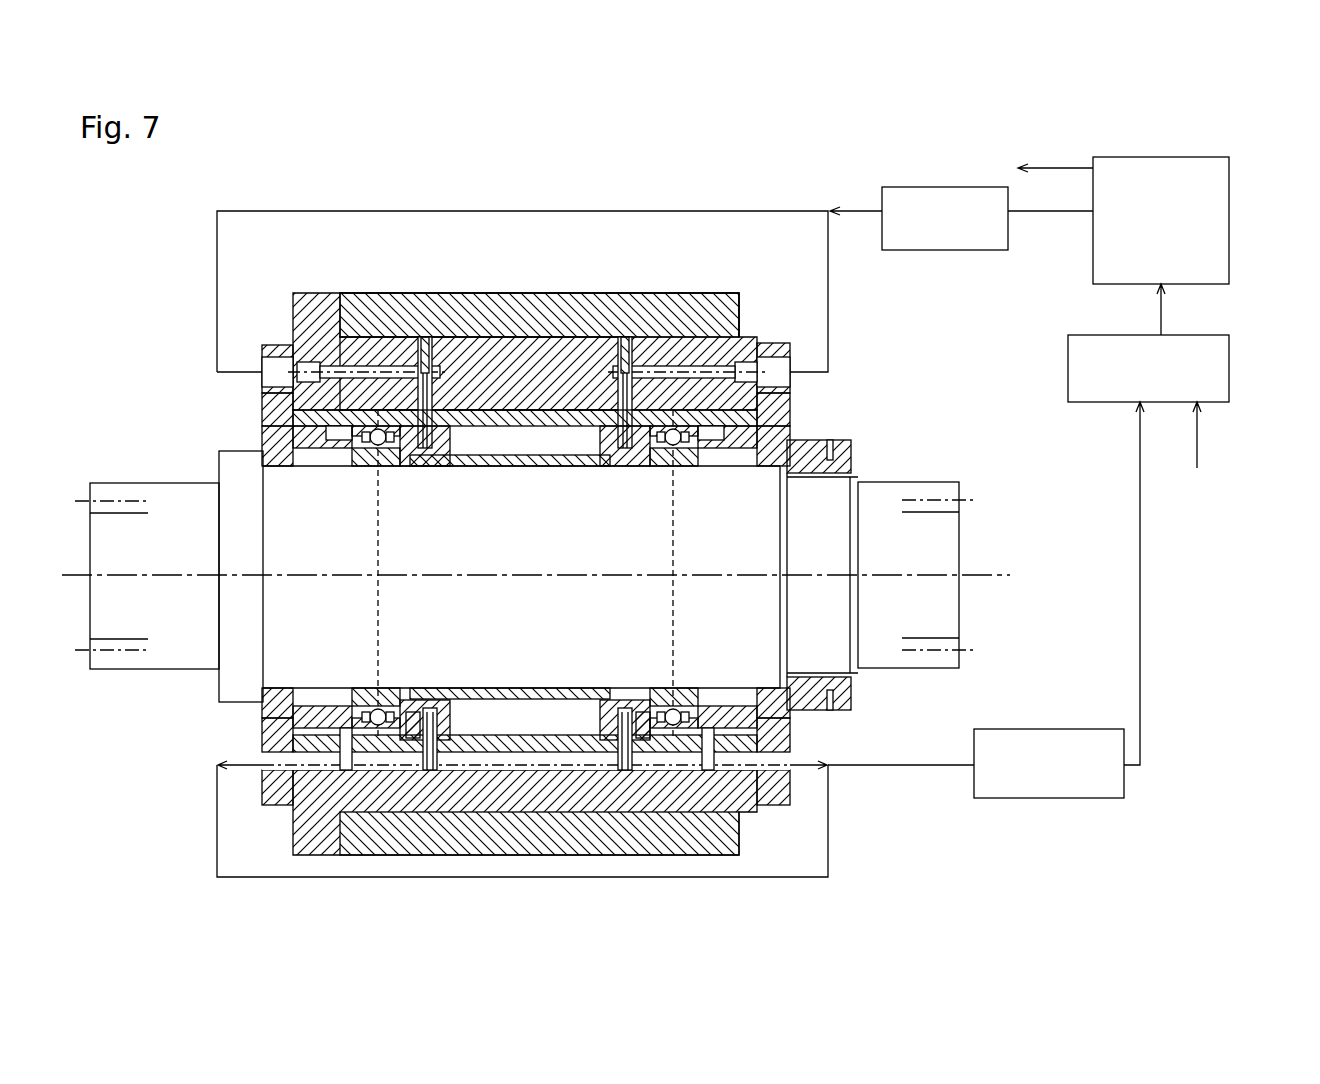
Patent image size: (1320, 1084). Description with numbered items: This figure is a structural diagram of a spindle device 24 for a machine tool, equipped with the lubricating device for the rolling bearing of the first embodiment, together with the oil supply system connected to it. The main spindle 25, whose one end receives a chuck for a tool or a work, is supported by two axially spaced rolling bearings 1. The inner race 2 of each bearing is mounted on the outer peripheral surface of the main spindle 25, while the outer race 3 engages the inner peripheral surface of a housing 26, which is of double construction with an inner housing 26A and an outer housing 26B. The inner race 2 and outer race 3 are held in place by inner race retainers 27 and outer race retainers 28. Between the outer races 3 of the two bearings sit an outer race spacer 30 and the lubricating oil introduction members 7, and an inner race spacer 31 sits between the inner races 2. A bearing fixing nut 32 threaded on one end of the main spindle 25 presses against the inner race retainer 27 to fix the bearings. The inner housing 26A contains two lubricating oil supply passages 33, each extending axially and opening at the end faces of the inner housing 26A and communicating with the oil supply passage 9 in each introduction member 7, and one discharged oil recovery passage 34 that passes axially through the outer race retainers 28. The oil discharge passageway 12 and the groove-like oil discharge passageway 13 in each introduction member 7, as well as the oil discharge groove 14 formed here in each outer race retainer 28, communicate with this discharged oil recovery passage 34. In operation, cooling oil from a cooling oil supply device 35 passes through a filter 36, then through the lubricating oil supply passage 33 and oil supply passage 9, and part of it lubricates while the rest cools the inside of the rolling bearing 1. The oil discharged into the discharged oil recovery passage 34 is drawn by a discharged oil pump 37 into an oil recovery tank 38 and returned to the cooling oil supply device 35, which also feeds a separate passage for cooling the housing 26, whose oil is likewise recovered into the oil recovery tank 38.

The rolling bearing 1 is at (369, 481).
The inner race 2 is at (393, 463).
The outer race 3 is at (372, 428).
The lubricating oil introduction member 7 is at (458, 468).
The oil supply passage 9 is at (427, 462).
The oil discharge passageway 12 is at (435, 742).
The groove-like oil discharge passageway 13 is at (410, 717).
The oil discharge groove 14 is at (343, 742).
The spindle device 24 is at (172, 319).
The main spindle 25 is at (892, 497).
The housing 26 is at (637, 251).
The inner housing 26A is at (585, 358).
The outer housing 26B is at (525, 322).
The inner race retainer 27 is at (262, 446).
The outer race retainer 28 is at (262, 402).
The outer race spacer 30 is at (481, 408).
The inner race spacer 31 is at (519, 462).
The bearing fixing nut 32 is at (853, 446).
The lubricating oil supply passage 33 is at (396, 362).
The discharged oil recovery passage 34 is at (542, 766).
The cooling oil supply device 35 is at (1229, 236).
The filter 36 is at (985, 250).
The discharged oil pump 37 is at (1065, 798).
The oil recovery tank 38 is at (1229, 374).